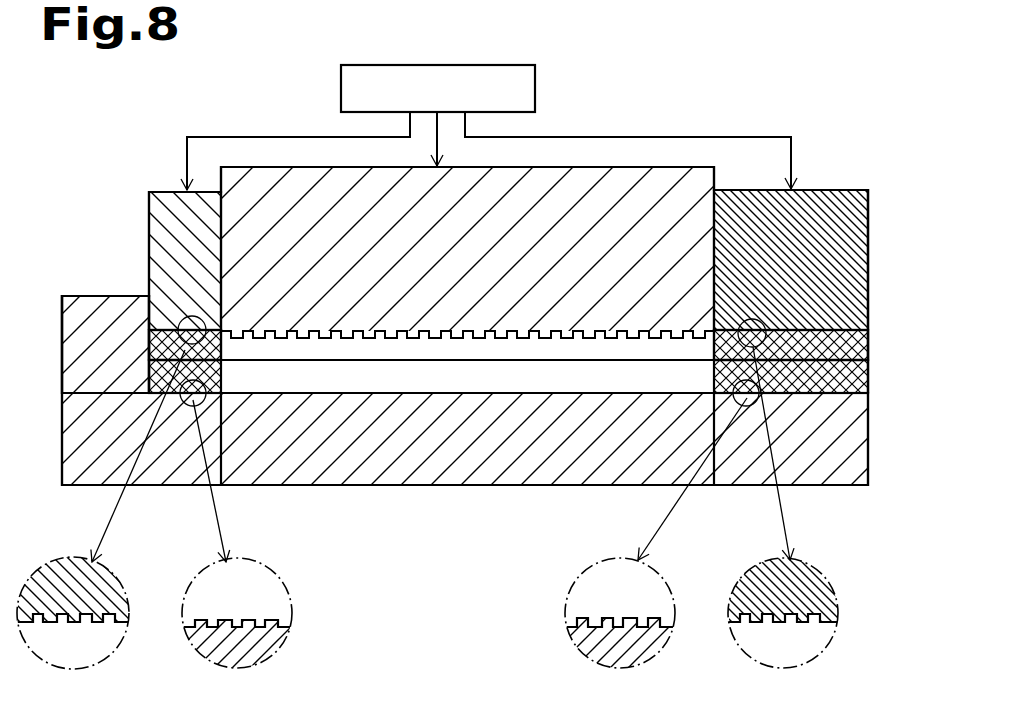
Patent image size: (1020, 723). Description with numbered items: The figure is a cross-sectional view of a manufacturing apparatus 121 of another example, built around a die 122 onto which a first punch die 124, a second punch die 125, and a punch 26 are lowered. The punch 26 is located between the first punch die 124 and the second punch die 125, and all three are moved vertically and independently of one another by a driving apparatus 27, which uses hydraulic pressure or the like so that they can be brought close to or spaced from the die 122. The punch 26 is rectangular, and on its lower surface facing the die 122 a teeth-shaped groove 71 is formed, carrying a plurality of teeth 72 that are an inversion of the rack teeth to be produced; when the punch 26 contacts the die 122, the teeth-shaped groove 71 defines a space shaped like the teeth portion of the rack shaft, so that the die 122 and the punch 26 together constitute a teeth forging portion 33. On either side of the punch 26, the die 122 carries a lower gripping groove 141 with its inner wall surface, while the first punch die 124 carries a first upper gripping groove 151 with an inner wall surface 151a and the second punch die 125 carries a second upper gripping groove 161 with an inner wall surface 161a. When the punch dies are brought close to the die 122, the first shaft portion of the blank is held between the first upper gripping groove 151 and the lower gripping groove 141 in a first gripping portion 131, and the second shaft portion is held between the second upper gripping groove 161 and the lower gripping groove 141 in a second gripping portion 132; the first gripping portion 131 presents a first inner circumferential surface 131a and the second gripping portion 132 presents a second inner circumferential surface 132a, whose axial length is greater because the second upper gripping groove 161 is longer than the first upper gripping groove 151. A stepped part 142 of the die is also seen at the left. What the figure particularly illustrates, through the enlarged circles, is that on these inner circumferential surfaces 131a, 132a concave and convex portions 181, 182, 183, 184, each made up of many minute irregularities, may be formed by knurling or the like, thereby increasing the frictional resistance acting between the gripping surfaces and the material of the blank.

The manufacturing apparatus 121 is at (57, 123).
The die 122 is at (62, 428).
The first punch die 124 is at (155, 192).
The second punch die 125 is at (829, 190).
The first gripping portion 131 is at (117, 278).
The first inner circumferential surface 131a is at (149, 335).
The second gripping portion 132 is at (871, 278).
The second inner circumferential surface 132a is at (848, 349).
The lower gripping groove 141 is at (475, 384).
The step part 142 is at (74, 374).
The first upper gripping groove 151 is at (185, 295).
The inner wall surface of the first upper gripping groove 151a is at (172, 330).
The second upper gripping groove 161 is at (791, 295).
The inner wall surface of the second upper gripping groove 161a is at (747, 330).
The punch 26 is at (627, 167).
The driving apparatus 27 is at (535, 82).
The teeth forging portion 33 is at (679, 158).
The teeth-shaped groove 71 is at (446, 335).
The teeth 72 is at (392, 334).
The concave and convex portion 181 is at (245, 611).
The concave and convex portion 182 is at (598, 616).
The concave and convex portion 183 is at (81, 632).
The concave and convex portion 184 is at (773, 632).